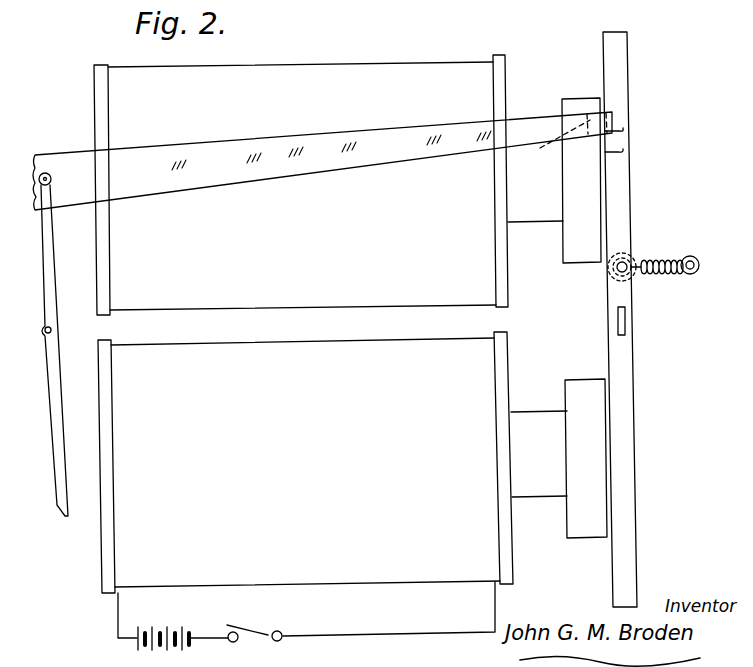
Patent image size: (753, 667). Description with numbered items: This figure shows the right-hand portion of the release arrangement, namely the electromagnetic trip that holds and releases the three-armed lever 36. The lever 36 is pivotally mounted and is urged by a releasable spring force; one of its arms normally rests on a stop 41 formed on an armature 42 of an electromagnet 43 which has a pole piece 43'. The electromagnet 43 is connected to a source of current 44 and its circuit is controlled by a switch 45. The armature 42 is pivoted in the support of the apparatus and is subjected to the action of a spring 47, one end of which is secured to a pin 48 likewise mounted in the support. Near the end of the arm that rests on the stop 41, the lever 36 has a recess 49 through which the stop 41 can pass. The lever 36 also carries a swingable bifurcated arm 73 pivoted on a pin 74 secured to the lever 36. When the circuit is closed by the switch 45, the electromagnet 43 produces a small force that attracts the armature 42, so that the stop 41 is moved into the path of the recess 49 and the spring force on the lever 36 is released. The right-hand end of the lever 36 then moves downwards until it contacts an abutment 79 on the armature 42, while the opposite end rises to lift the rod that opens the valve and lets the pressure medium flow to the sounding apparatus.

The three-armed lever 36 is at (241, 148).
The stop 41 is at (615, 139).
The armature 42 is at (618, 64).
The electromagnet 43 is at (322, 170).
The pole piece 43' is at (554, 159).
The source of current 44 is at (168, 632).
The switch 45 is at (258, 630).
The spring 47 is at (656, 278).
The pin 48 is at (688, 257).
The recess 49 is at (562, 142).
The swingable bifurcated arm 73 is at (52, 270).
The pin 74 is at (52, 177).
The abutment 79 is at (622, 326).